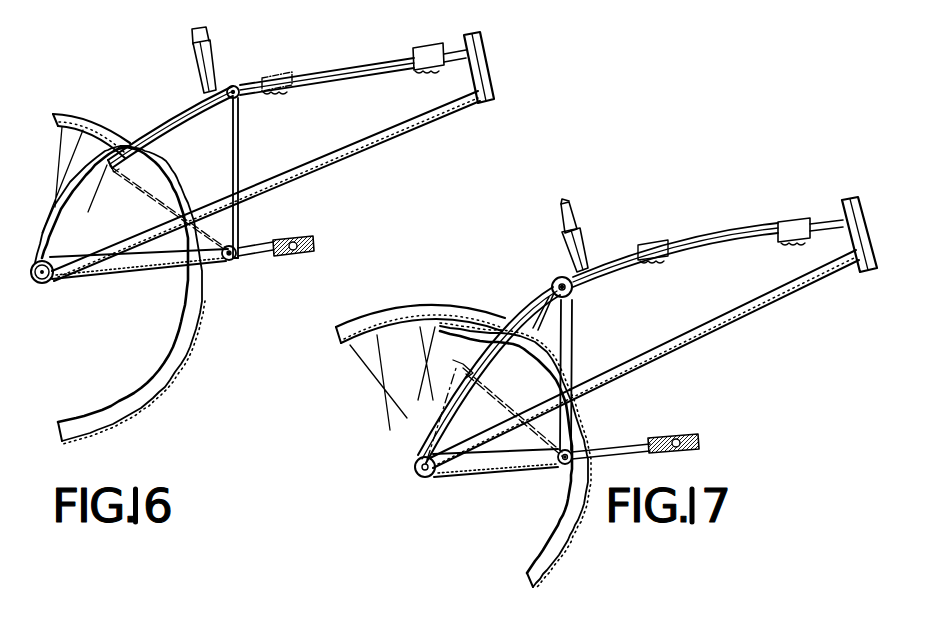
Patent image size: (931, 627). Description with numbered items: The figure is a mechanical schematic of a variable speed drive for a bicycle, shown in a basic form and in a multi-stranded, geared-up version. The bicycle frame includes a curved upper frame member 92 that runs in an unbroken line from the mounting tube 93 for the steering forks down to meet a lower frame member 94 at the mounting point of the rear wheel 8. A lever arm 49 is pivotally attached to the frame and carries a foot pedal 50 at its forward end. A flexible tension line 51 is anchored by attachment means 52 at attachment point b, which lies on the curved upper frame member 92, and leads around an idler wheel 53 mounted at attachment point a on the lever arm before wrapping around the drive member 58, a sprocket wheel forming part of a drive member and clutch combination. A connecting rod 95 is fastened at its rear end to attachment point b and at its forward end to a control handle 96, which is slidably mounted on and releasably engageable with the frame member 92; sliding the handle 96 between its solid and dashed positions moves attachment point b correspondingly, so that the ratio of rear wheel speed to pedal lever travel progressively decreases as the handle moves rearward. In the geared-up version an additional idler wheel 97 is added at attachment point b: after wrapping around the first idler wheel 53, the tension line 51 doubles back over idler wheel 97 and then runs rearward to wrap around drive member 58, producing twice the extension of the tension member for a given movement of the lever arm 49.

In FIG. 16, the rear wheel 8 is at (78, 118).
In FIG. 17, the rear wheel 8 is at (441, 312).
In FIG. 16, the lever arm 49 is at (66, 283).
In FIG. 17, the lever arm 49 is at (636, 444).
In FIG. 16, the foot pedal 50 is at (315, 245).
In FIG. 17, the foot pedal 50 is at (703, 440).
In FIG. 16, the tension line 51 is at (239, 157).
In FIG. 17, the tension line 51 is at (574, 342).
In FIG. 16, the attachment means 52 is at (241, 96).
In FIG. 16, the idler wheel 53 is at (227, 262).
In FIG. 17, the idler wheel 53 is at (558, 467).
In FIG. 17, the drive member 58 is at (423, 478).
In FIG. 16, the curved upper frame member 92 is at (450, 53).
In FIG. 17, the curved upper frame member 92 is at (821, 222).
In FIG. 16, the mounting tube 93 is at (495, 72).
In FIG. 17, the mounting tube 93 is at (867, 206).
In FIG. 16, the lower frame member 94 is at (389, 136).
In FIG. 17, the lower frame member 94 is at (757, 313).
In FIG. 16, the connecting rod 95 is at (330, 71).
In FIG. 17, the connecting rod 95 is at (675, 255).
In FIG. 16, the control handle 96 is at (425, 48).
In FIG. 17, the control handle 96 is at (795, 222).
In FIG. 17, the idler wheel 97 is at (560, 279).
In FIG. 16, the first attachment point a is at (237, 260).
In FIG. 17, the first attachment point a is at (572, 451).
In FIG. 16, the second attachment point b is at (234, 86).
In FIG. 17, the second attachment point b is at (573, 290).